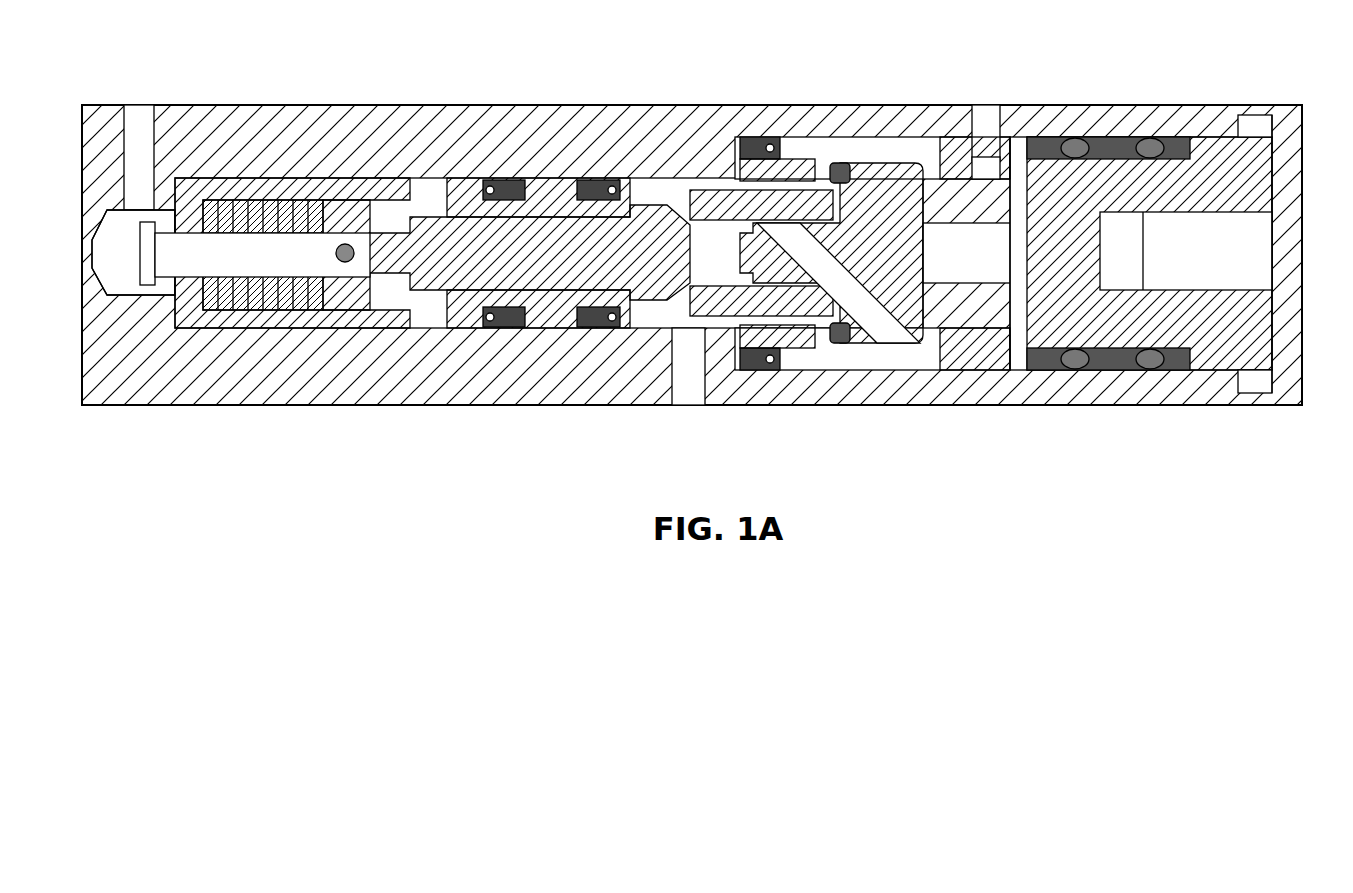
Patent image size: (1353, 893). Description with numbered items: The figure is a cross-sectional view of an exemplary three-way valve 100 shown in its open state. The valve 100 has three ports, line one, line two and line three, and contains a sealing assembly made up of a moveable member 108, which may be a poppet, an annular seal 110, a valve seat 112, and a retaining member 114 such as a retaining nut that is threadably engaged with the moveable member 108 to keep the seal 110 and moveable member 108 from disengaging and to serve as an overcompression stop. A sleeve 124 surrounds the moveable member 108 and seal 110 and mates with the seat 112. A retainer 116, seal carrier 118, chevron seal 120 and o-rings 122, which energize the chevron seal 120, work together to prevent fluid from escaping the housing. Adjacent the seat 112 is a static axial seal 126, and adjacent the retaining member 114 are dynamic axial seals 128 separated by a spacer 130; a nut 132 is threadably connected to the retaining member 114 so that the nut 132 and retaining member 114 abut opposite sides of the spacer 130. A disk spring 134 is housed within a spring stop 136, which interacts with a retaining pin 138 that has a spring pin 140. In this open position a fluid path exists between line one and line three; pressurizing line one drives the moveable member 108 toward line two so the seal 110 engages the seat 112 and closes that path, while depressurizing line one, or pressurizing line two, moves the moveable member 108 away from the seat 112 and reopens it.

The three-way valve 100 is at (355, 138).
The moveable member 108 is at (845, 238).
The seal 110 is at (838, 172).
The valve seat 112 is at (800, 160).
The retaining member 114 is at (757, 200).
The retainer 116 is at (1275, 330).
The seal carrier 118 is at (1190, 330).
The chevron seal 120 is at (1076, 132).
The o-rings 122 is at (1106, 132).
The sleeve 124 is at (948, 352).
The static axial seal 126 is at (770, 178).
The dynamic axial seals 128 is at (515, 322).
The spacer 130 is at (560, 197).
The nut 132 is at (412, 298).
The disk spring 134 is at (284, 302).
The spring stop 136 is at (198, 308).
The retaining pin 138 is at (150, 258).
The spring pin 140 is at (346, 262).